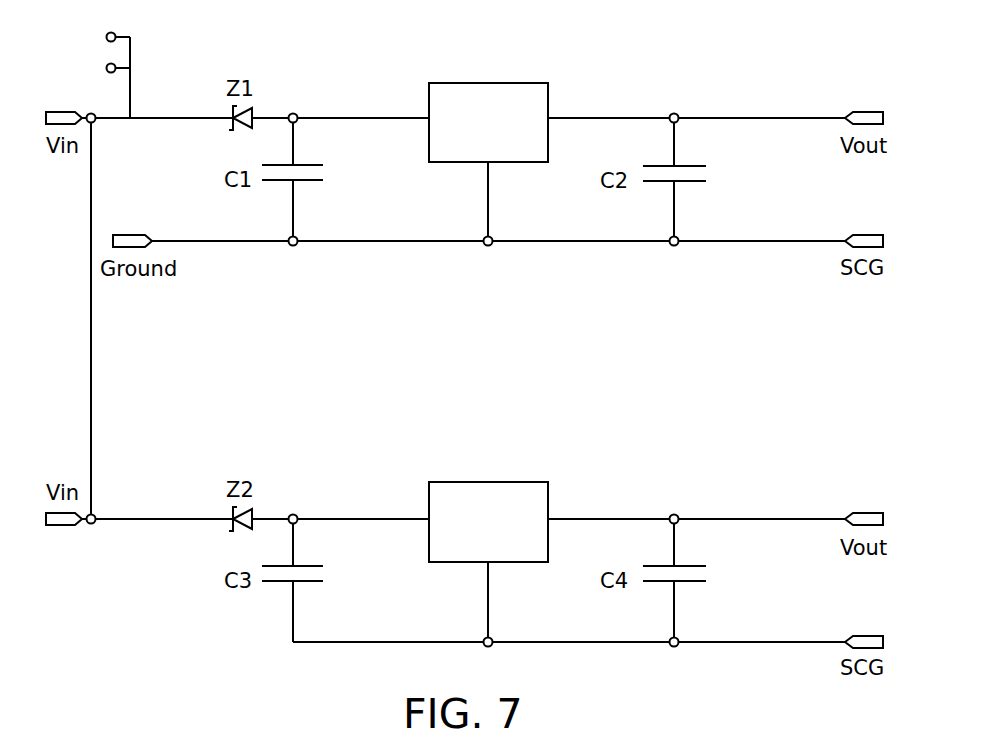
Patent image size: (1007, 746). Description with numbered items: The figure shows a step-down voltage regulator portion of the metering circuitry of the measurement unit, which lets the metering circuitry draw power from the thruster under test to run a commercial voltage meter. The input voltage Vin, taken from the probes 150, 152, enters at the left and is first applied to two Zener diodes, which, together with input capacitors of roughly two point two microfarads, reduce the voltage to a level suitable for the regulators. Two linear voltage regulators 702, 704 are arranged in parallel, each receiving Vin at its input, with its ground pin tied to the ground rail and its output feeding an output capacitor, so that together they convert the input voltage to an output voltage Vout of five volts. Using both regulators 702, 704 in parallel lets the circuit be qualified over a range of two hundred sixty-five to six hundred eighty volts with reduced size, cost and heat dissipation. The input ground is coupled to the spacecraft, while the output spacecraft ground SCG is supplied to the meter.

The first input terminal 150 is at (107, 34).
The probe 152 is at (107, 65).
The linear voltage regulator 702 is at (468, 107).
The linear voltage regulator 704 is at (468, 507).